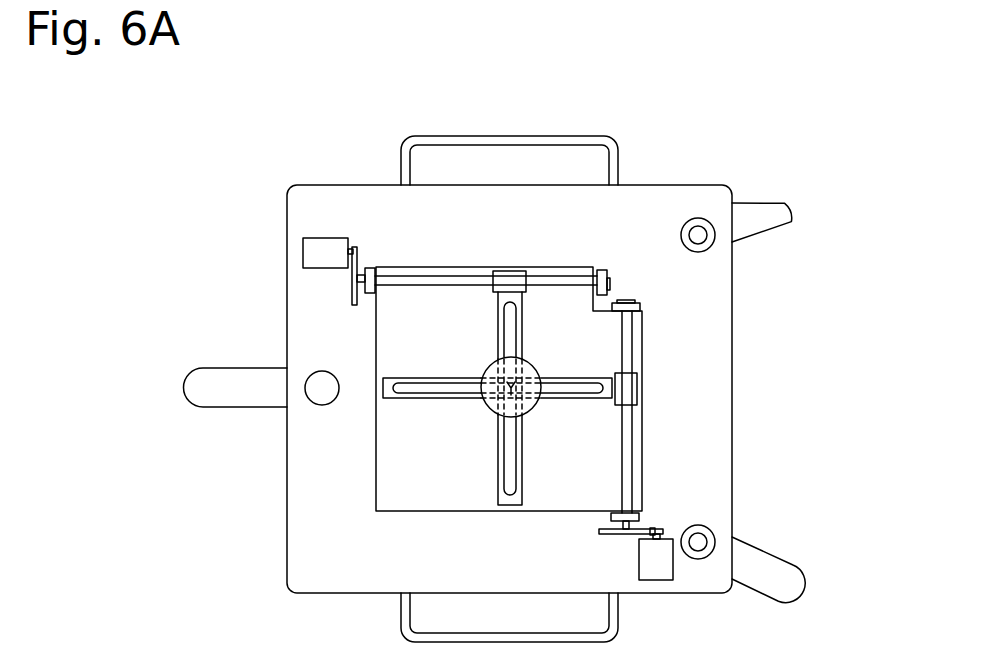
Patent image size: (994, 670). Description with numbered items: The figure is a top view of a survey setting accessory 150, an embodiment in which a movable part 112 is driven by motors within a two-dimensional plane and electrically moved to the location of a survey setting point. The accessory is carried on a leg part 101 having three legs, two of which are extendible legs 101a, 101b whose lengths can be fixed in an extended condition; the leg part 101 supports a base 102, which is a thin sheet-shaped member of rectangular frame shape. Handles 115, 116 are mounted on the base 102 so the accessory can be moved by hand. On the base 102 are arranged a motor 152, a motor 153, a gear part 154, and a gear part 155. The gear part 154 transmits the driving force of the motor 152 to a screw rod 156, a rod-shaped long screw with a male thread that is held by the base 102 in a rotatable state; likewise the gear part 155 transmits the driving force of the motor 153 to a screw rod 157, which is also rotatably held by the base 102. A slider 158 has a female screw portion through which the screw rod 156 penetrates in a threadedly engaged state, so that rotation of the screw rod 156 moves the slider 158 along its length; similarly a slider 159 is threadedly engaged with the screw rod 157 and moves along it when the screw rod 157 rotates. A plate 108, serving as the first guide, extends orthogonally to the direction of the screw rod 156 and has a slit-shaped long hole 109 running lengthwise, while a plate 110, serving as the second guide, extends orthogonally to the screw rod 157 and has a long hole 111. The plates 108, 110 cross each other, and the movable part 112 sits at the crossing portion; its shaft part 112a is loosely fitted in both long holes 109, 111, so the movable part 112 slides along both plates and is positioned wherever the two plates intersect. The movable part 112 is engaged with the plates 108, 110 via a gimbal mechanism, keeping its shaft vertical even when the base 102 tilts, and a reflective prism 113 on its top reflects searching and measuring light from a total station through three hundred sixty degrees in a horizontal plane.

The leg part 101 is at (173, 405).
The extendible leg 101a is at (767, 563).
The extendible leg 101b is at (785, 207).
The base 102 is at (712, 466).
The plate 108 is at (500, 498).
The long hole 109 is at (508, 470).
The plate 110 is at (383, 382).
The long hole 111 is at (430, 388).
The movable part 112 is at (550, 362).
The shaft part 112a is at (511, 387).
The reflective prism 113 is at (532, 363).
The handle 115 is at (447, 136).
The handle 116 is at (617, 605).
The survey setting accessory 150 is at (703, 139).
The motor 152 is at (313, 248).
The motor 153 is at (665, 567).
The gear part 154 is at (359, 253).
The gear part 155 is at (658, 514).
The screw rod 156 is at (565, 275).
The screw rod 157 is at (635, 440).
The slider 158 is at (507, 278).
The slider 159 is at (625, 390).